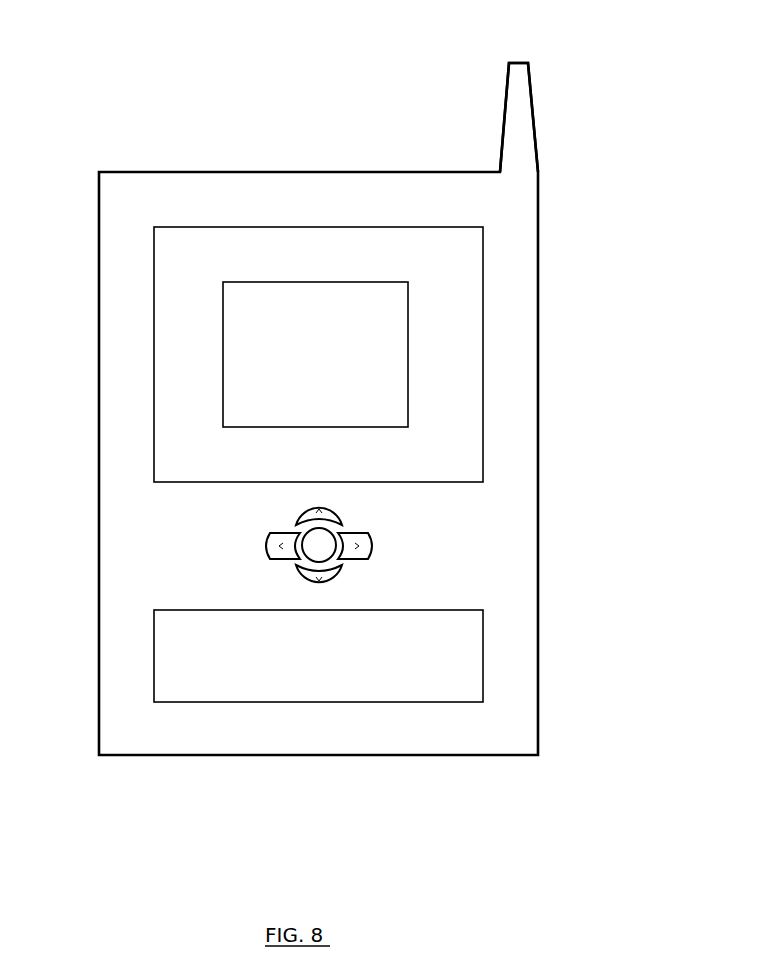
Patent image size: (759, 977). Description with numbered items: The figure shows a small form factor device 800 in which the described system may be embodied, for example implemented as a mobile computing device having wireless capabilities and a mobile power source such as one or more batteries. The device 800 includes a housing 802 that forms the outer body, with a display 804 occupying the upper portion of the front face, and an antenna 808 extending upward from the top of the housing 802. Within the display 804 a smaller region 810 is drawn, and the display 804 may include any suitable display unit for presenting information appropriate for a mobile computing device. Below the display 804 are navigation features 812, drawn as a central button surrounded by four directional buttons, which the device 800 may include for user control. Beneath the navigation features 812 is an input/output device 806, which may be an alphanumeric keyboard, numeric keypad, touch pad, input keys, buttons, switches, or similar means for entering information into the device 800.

The device 800 is at (114, 76).
The housing 802 is at (539, 465).
The display 804 is at (484, 243).
The input/output (I/O) device 806 is at (484, 647).
The antenna 808 is at (505, 110).
The display window 810 is at (315, 354).
The navigation features 812 is at (400, 538).